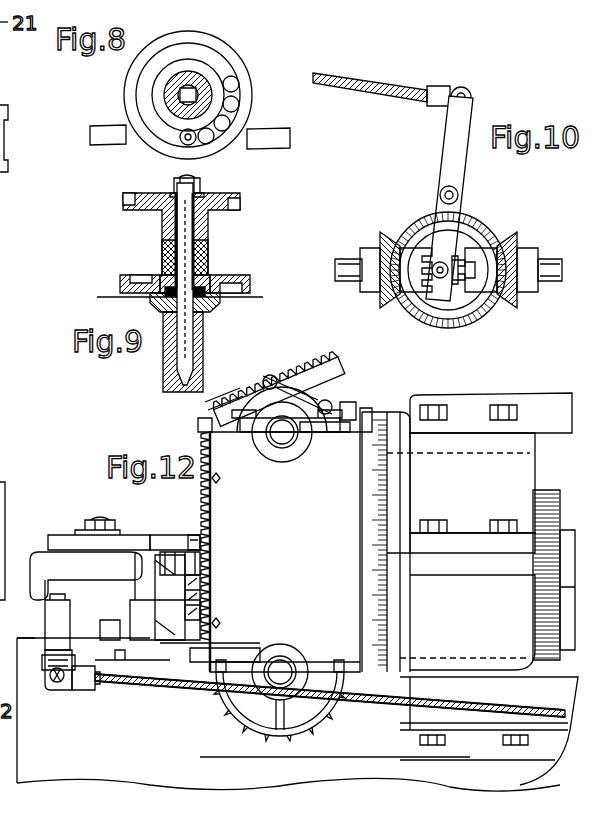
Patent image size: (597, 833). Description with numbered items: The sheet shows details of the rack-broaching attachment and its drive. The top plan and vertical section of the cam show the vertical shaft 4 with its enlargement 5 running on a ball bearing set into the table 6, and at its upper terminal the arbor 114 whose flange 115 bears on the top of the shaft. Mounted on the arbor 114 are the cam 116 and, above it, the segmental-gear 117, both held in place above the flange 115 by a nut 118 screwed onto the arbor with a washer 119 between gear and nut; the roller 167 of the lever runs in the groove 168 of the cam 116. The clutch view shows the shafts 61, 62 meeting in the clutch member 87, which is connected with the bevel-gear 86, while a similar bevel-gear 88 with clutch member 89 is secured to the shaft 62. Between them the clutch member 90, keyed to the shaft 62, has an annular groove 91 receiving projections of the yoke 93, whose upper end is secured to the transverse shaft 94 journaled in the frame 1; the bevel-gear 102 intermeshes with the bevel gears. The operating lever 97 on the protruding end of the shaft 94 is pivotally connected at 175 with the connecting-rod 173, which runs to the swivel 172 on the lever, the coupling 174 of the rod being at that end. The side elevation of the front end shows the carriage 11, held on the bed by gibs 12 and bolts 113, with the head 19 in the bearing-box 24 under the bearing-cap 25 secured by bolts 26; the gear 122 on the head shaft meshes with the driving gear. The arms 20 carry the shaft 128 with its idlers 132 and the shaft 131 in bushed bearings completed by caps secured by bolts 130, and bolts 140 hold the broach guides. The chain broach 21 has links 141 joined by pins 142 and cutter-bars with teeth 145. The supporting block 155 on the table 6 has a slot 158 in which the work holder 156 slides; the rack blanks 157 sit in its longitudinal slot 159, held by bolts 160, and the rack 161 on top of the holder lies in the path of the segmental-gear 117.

In FIG. 12, the frame 1 is at (288, 714).
In FIG. 9, the shaft 4 is at (165, 355).
In FIG. 9, the enlargement 5 is at (220, 300).
In FIG. 12, the table 6 is at (40, 640).
In FIG. 12, the carriage 11 is at (540, 690).
In FIG. 12, the gibs 12 is at (420, 722).
In FIG. 12, the head 19 is at (535, 462).
In FIG. 12, the arms 20 is at (285, 552).
In FIG. 12, the chain broach 21 is at (278, 382).
In FIG. 12, the bearing-box 24 is at (461, 601).
In FIG. 12, the bearing-cap 25 is at (461, 483).
In FIG. 12, the bolts 26 is at (500, 526).
In FIG. 10, the shaft 61 is at (348, 282).
In FIG. 10, the shaft 62 is at (548, 282).
In FIG. 10, the bevel-gear 86 is at (385, 238).
In FIG. 10, the clutch member 87 is at (410, 300).
In FIG. 10, the bevel-gear 88 is at (507, 300).
In FIG. 10, the clutch member 89 is at (512, 240).
In FIG. 10, the clutch member 90 is at (442, 282).
In FIG. 10, the annular groove 91 is at (438, 290).
In FIG. 10, the yoke 93 is at (478, 226).
In FIG. 10, the transverse shaft 94 is at (458, 193).
In FIG. 10, the operating lever 97 is at (450, 148).
In FIG. 10, the bevel-gear 102 is at (478, 318).
In FIG. 12, the bolts 113 is at (420, 740).
In FIG. 8, the arbor 114 is at (172, 92).
In FIG. 9, the arbor 114 is at (186, 344).
In FIG. 9, the flange 115 is at (208, 275).
In FIG. 8, the cam 116 is at (248, 88).
In FIG. 9, the cam 116 is at (122, 283).
In FIG. 9, the segmental-gear 117 is at (240, 205).
In FIG. 9, the nut 118 is at (186, 182).
In FIG. 9, the washer 119 is at (200, 193).
In FIG. 12, the gear 122 is at (545, 630).
In FIG. 12, the shaft 128 is at (298, 446).
In FIG. 12, the bolts 130 is at (200, 424).
In FIG. 12, the shaft 131 is at (290, 664).
In FIG. 12, the idlers 132 is at (286, 402).
In FIG. 12, the bolts 140 is at (219, 480).
In FIG. 12, the links 141 is at (338, 396).
In FIG. 12, the pin 142 is at (262, 378).
In FIG. 12, the teeth 145 is at (214, 408).
In FIG. 12, the supporting block 155 is at (86, 583).
In FIG. 12, the work holder 156 is at (175, 597).
In FIG. 12, the rack blanks 157 is at (202, 610).
In FIG. 12, the slot 158 is at (150, 548).
In FIG. 12, the longitudinal slot 159 is at (165, 635).
In FIG. 12, the bolts 160 is at (202, 538).
In FIG. 12, the rack 161 is at (162, 546).
In FIG. 8, the roller 167 is at (195, 143).
In FIG. 8, the groove 168 is at (220, 72).
In FIG. 9, the groove 168 is at (250, 284).
In FIG. 12, the swivel 172 is at (48, 670).
In FIG. 10, the connecting-rod 173 is at (385, 83).
In FIG. 12, the connecting-rod 173 is at (356, 718).
In FIG. 12, the coupling 174 is at (62, 686).
In FIG. 10, the pivotal connection 175 is at (470, 93).